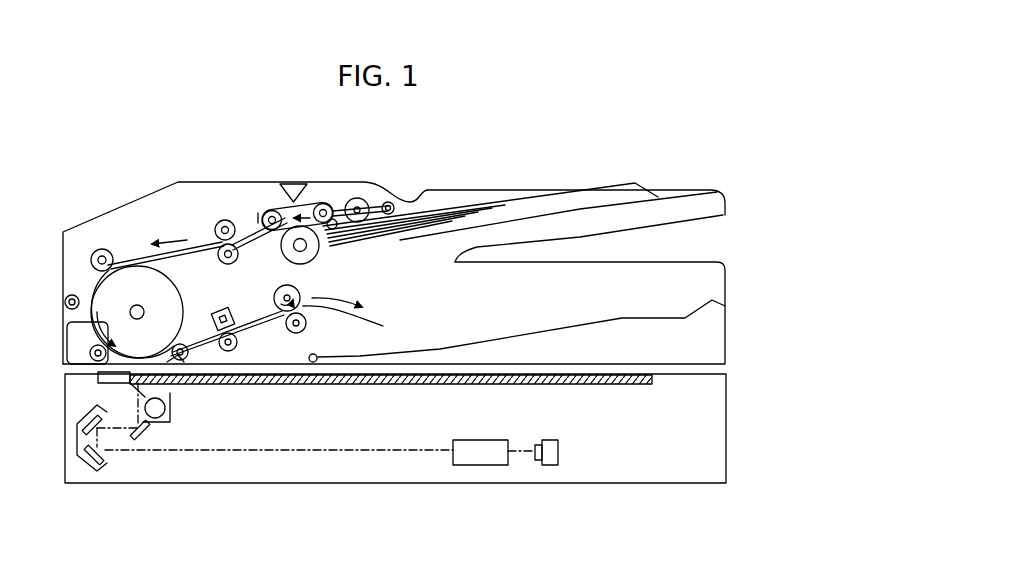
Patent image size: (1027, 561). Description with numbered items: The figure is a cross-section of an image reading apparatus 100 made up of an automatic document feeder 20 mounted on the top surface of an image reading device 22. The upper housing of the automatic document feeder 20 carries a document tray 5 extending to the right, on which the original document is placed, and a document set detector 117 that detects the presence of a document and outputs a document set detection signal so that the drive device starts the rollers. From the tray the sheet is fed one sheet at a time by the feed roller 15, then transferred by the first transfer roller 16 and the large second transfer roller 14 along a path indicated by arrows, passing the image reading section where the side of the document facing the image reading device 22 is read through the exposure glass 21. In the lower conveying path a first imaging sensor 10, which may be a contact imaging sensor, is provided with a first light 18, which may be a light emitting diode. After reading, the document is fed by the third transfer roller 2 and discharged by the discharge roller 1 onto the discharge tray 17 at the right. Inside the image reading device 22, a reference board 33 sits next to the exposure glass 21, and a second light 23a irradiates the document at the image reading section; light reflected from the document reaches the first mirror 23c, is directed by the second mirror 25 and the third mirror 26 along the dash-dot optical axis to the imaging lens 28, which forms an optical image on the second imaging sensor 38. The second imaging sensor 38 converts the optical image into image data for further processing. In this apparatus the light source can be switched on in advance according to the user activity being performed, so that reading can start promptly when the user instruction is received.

The image reading apparatus 100 is at (658, 156).
The automatic document feeder 20 is at (63, 256).
The image reading device 22 is at (65, 412).
The document set detector 117 is at (293, 183).
The document tray 5 is at (478, 207).
The second transfer roller 14 is at (172, 281).
The first transfer roller 16 is at (225, 220).
The feed roller 15 is at (318, 253).
The first light 18 is at (218, 309).
The first imaging sensor 10 is at (233, 311).
The discharge roller 1 is at (305, 327).
The third transfer roller 2 is at (237, 345).
The discharge tray 17 is at (373, 316).
The reference board 33 is at (98, 374).
The exposure glass 21 is at (610, 375).
The second light 23a is at (166, 408).
The first mirror 23c is at (150, 430).
The second mirror 25 is at (82, 433).
The third mirror 26 is at (85, 453).
The imaging lens 28 is at (492, 440).
The second imaging sensor 38 is at (539, 444).